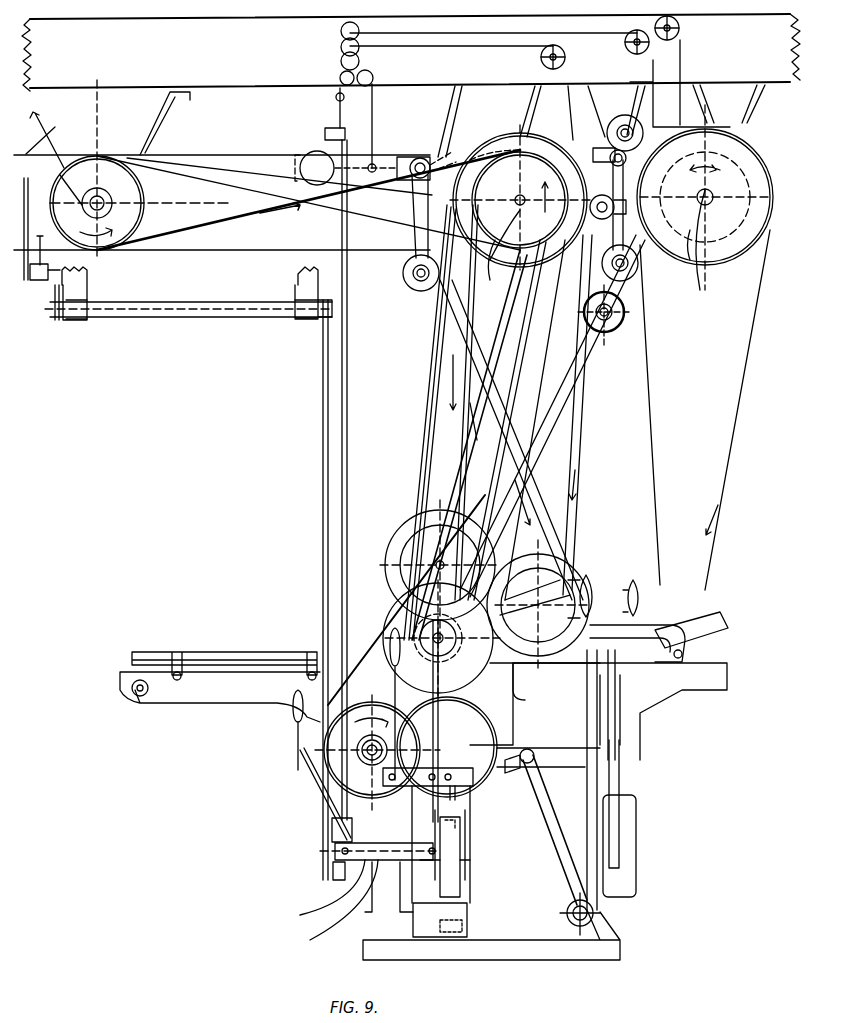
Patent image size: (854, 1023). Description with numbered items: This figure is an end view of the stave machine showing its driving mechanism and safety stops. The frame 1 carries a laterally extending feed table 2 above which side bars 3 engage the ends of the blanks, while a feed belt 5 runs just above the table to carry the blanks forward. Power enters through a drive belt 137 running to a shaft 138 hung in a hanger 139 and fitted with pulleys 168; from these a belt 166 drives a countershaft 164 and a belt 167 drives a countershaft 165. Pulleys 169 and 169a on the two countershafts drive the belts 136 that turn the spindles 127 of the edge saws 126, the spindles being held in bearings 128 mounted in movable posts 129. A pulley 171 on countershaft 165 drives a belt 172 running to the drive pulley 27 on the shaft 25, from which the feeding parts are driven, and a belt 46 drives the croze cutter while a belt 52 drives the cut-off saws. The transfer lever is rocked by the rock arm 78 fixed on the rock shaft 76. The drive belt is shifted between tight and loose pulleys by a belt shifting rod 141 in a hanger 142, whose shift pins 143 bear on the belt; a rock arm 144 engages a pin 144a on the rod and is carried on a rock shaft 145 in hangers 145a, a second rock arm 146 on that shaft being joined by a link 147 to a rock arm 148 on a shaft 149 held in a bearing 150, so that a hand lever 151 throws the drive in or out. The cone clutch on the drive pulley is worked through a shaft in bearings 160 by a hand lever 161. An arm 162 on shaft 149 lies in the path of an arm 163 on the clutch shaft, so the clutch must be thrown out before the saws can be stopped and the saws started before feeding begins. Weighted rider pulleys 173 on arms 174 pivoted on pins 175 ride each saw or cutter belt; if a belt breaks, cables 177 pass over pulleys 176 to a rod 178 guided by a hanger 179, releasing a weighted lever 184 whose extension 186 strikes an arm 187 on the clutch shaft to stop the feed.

The frame 1 is at (640, 798).
The feed table 2 is at (235, 685).
The side bars 3 is at (225, 650).
The feed belt 5 is at (178, 700).
The shaft 25 is at (360, 768).
The drive pulley 27 is at (308, 730).
The belt 46 is at (432, 405).
The belt 52 is at (432, 345).
The rock shaft 76 is at (570, 916).
The rock arm 78 is at (556, 855).
The edge saws 126 is at (645, 545).
The spindles 127 is at (610, 567).
The bearings 128 is at (722, 605).
The movable posts 129 is at (700, 645).
The belts 136 is at (760, 388).
The drive belt 137 is at (50, 135).
The shaft 138 is at (105, 200).
The hanger 139 is at (160, 125).
The belt shifting rod 141 is at (35, 275).
The hanger 142 is at (26, 280).
The shift pins 143 is at (55, 248).
The rock arm 144 is at (70, 322).
The pin 144a is at (88, 272).
The rock shaft 145 is at (160, 322).
The hangers 145a is at (300, 290).
The rock arm 146 is at (310, 320).
The link 147 is at (322, 832).
The rock arm 148 is at (332, 875).
The shaft 149 is at (316, 894).
The bearing 150 is at (329, 905).
The hand lever 151 is at (300, 775).
The bearings 160 is at (490, 748).
The hand lever 161 is at (435, 635).
The arm 162 is at (462, 858).
The arm 163 is at (440, 812).
The countershaft 164 is at (700, 272).
The countershaft 165 is at (502, 253).
The belt 166 is at (260, 175).
The belt 167 is at (247, 245).
The pulleys 168 is at (144, 222).
The pulley 169 is at (750, 220).
The pulley 169a is at (525, 268).
The pulley 171 is at (478, 210).
The belt 172 is at (468, 460).
The rider pulleys 173 is at (625, 345).
The arm 174 is at (660, 300).
The pin 175 is at (435, 160).
The pulleys 176 is at (683, 65).
The cables 177 is at (697, 28).
The rod 178 is at (336, 110).
The hanger 179 is at (325, 133).
The weighted lever 184 is at (467, 888).
The extension 186 is at (460, 838).
The arm 187 is at (457, 795).